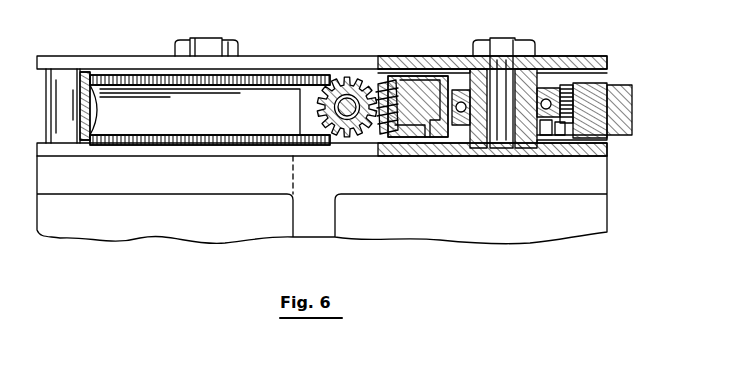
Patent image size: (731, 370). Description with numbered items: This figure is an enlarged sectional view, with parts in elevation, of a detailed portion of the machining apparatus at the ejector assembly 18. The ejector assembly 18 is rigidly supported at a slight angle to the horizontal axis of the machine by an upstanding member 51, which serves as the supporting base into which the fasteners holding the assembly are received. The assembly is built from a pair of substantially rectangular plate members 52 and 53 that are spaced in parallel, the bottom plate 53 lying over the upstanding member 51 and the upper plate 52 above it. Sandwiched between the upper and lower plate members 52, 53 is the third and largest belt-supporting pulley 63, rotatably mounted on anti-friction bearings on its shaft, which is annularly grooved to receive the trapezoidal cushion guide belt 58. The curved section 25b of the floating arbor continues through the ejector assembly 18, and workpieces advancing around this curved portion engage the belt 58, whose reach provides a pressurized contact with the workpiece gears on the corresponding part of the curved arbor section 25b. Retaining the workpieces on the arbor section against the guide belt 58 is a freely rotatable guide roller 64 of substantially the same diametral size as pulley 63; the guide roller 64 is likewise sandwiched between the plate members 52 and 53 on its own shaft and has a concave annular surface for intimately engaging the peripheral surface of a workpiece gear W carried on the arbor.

The ejector assembly 18 is at (583, 52).
The upstanding member 51 is at (607, 190).
The plate member 52 is at (448, 57).
The plate member 53 is at (452, 156).
The cushion guide belt 58 is at (626, 108).
The pulley 63 is at (612, 77).
The guide roller 64 is at (265, 98).
The worm wheel W is at (355, 78).
The curved section 25b is at (367, 82).